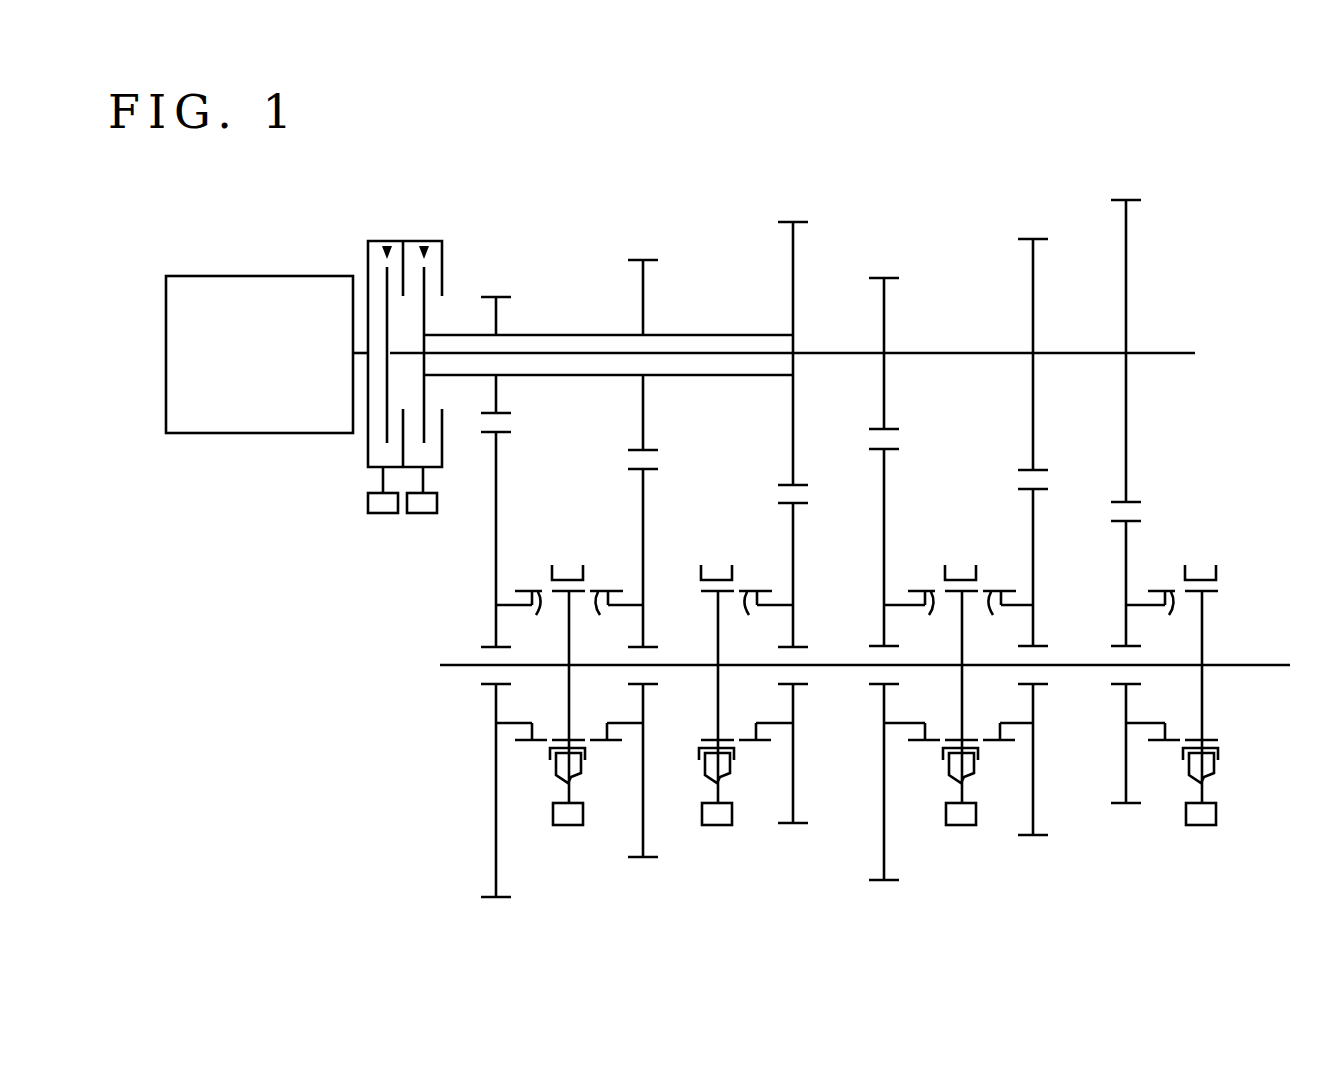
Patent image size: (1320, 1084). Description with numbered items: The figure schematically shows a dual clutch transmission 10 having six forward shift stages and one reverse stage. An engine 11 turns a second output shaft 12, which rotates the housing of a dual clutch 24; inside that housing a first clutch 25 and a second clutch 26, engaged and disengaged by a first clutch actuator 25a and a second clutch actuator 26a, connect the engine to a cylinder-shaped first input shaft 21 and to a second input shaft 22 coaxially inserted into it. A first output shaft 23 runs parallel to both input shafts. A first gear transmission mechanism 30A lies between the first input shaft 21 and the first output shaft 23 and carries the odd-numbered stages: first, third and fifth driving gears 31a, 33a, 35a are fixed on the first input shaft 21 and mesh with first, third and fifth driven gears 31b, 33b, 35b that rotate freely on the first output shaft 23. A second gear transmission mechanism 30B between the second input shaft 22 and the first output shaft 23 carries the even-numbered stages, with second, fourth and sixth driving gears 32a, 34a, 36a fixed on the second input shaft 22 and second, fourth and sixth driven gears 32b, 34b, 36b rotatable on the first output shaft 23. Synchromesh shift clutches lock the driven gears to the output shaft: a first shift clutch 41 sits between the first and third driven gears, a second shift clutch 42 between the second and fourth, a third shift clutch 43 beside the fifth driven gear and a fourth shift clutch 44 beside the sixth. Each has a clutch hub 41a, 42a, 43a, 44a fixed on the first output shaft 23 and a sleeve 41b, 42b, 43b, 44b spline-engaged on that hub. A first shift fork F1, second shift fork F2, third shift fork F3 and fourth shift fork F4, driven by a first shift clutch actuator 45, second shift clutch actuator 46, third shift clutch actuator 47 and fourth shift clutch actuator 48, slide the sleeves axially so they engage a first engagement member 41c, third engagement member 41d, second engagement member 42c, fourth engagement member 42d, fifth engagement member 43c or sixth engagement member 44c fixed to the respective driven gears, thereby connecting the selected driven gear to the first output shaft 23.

The dual clutch transmission 10 is at (988, 153).
The engine 11 is at (291, 275).
The second output shaft 12 is at (363, 358).
The first input shaft 21 is at (548, 333).
The second input shaft 22 is at (592, 352).
The first output shaft 23 is at (835, 668).
The dual clutch 24 is at (420, 170).
The first clutch 25 is at (425, 246).
The second clutch 26 is at (388, 246).
The first clutch actuator 25a is at (423, 514).
The second clutch actuator 26a is at (383, 514).
The first gear transmission mechanism 30A is at (712, 218).
The second gear transmission mechanism 30B is at (1046, 162).
The first driving gear 31a is at (497, 294).
The first driven gear 31b is at (488, 899).
The second driving gear 32a is at (893, 276).
The second driven gear 32b is at (878, 883).
The third driving gear 33a is at (648, 258).
The third driven gear 33b is at (635, 859).
The fourth driving gear 34a is at (1040, 237).
The fourth driven gear 34b is at (1028, 838).
The fifth driving gear 35a is at (800, 220).
The fifth driven gear 35b is at (786, 825).
The sixth driving gear 36a is at (1133, 198).
The sixth driven gear 36b is at (1117, 806).
The first shift clutch 41 is at (542, 777).
The first clutch hub 41a is at (572, 694).
The first sleeve 41b is at (585, 571).
The first engagement member 41c is at (529, 622).
The third engagement member 41d is at (615, 622).
The second shift clutch 42 is at (932, 777).
The second clutch hub 42a is at (965, 694).
The second sleeve 42b is at (977, 572).
The second engagement member 42c is at (918, 622).
The fourth engagement member 42d is at (1005, 622).
The third shift clutch 43 is at (692, 777).
The third clutch hub 43a is at (721, 694).
The third sleeve 43b is at (733, 572).
The fifth engagement member 43c is at (764, 622).
The fourth shift clutch 44 is at (1182, 777).
The fourth clutch hub 44a is at (1205, 694).
The fourth sleeve 44b is at (1218, 573).
The sixth engagement member 44c is at (1160, 622).
The first shift clutch actuator 45 is at (570, 826).
The second shift clutch actuator 46 is at (963, 826).
The third shift clutch actuator 47 is at (719, 826).
The fourth shift clutch actuator 48 is at (1203, 826).
The first shift fork F1 is at (578, 773).
The second shift fork F2 is at (971, 773).
The third shift fork F3 is at (727, 773).
The fourth shift fork F4 is at (1211, 773).